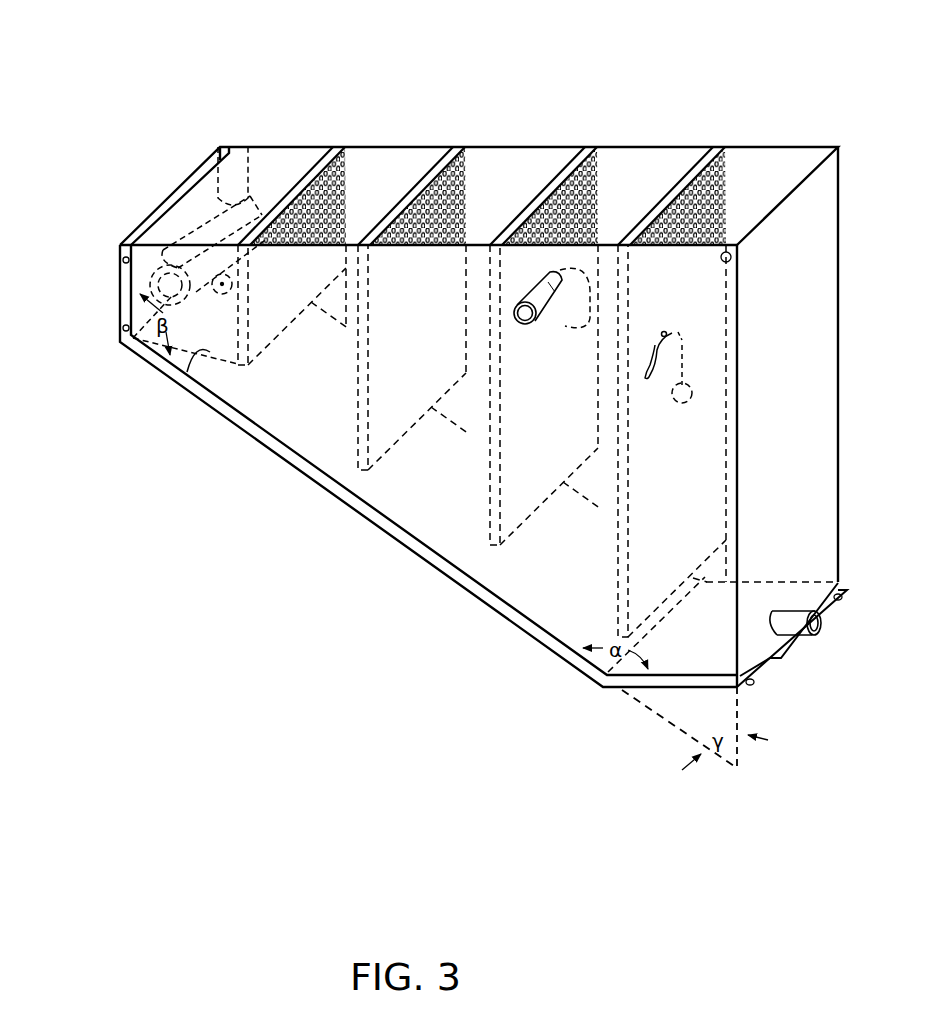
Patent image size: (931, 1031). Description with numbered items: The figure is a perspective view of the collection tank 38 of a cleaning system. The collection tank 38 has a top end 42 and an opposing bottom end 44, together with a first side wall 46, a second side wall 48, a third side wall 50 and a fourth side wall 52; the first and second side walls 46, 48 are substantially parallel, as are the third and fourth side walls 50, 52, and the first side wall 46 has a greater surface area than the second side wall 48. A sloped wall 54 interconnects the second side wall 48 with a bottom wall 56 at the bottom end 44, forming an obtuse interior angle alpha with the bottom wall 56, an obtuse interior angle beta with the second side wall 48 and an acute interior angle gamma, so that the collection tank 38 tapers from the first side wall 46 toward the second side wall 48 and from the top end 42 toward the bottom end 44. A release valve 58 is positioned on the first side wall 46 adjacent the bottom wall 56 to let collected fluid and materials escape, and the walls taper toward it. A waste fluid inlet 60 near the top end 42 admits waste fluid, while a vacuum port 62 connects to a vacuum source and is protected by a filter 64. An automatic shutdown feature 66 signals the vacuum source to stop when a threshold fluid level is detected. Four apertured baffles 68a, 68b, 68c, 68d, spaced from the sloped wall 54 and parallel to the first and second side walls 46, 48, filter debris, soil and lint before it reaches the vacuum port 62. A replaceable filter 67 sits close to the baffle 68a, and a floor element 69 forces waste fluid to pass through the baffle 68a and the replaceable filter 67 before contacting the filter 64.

The collection tank 38 is at (226, 560).
The top end 42 is at (516, 152).
The bottom end 44 is at (688, 688).
The first side wall 46 is at (809, 381).
The second side wall 48 is at (183, 190).
The third side wall 50 is at (329, 412).
The fourth side wall 52 is at (665, 172).
The sloped wall 54 is at (410, 557).
The bottom wall 56 is at (713, 688).
The release valve 58 is at (798, 635).
The waste fluid inlet 60 is at (547, 323).
The vacuum port 62 is at (168, 268).
The filter 64 is at (247, 162).
The automatic shutdown feature 66 is at (657, 350).
The replaceable filter 67 is at (325, 152).
The baffle 68a is at (331, 152).
The baffle 68b is at (442, 152).
The baffle 68c is at (582, 152).
The baffle 68d is at (722, 152).
The floor element 69 is at (187, 372).